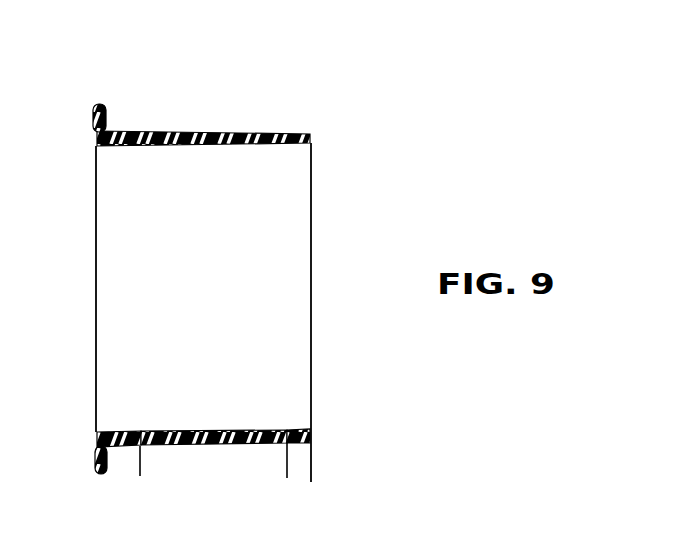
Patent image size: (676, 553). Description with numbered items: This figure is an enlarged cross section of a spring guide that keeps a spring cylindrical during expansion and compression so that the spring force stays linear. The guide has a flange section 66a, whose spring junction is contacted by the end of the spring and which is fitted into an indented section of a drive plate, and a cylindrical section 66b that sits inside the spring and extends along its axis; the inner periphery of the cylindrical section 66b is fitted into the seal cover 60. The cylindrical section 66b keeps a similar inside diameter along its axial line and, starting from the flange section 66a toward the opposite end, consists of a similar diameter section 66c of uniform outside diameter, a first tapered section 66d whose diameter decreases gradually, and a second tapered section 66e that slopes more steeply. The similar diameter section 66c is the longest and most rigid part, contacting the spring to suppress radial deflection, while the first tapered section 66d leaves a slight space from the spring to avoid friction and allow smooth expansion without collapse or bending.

The seal cover 60 is at (287, 72).
The flange section 66a is at (92, 122).
The cylindrical section 66b is at (216, 130).
The similar diameter section 66c is at (141, 482).
The first tapered section 66d is at (285, 483).
The second tapered section 66e is at (312, 483).